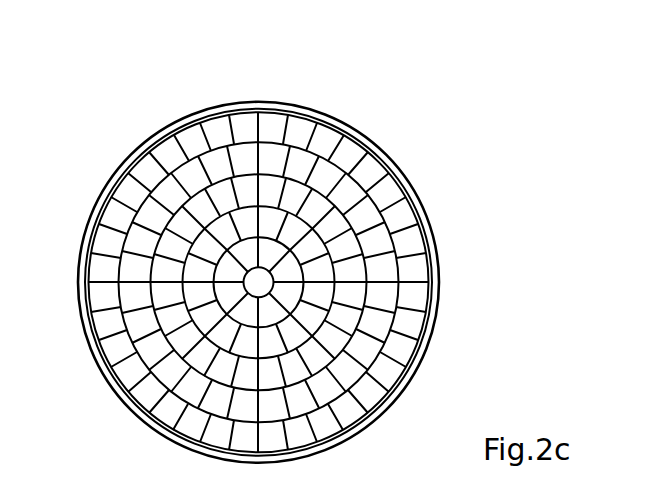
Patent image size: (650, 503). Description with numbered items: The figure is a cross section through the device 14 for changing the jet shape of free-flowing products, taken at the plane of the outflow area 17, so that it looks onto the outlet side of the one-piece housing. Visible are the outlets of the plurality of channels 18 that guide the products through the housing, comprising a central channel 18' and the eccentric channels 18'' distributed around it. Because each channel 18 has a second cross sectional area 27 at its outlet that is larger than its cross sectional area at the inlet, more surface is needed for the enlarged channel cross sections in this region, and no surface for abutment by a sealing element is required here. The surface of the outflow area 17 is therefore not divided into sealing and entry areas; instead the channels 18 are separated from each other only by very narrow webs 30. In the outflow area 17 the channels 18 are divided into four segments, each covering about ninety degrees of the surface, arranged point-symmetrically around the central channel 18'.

The device 14 is at (101, 120).
The outflow area 17 is at (134, 224).
The channels 18 is at (377, 282).
The central channel 18' is at (376, 273).
The eccentric channels 18'' is at (364, 290).
The second cross sectional area 27 is at (130, 374).
The webs 30 is at (123, 318).